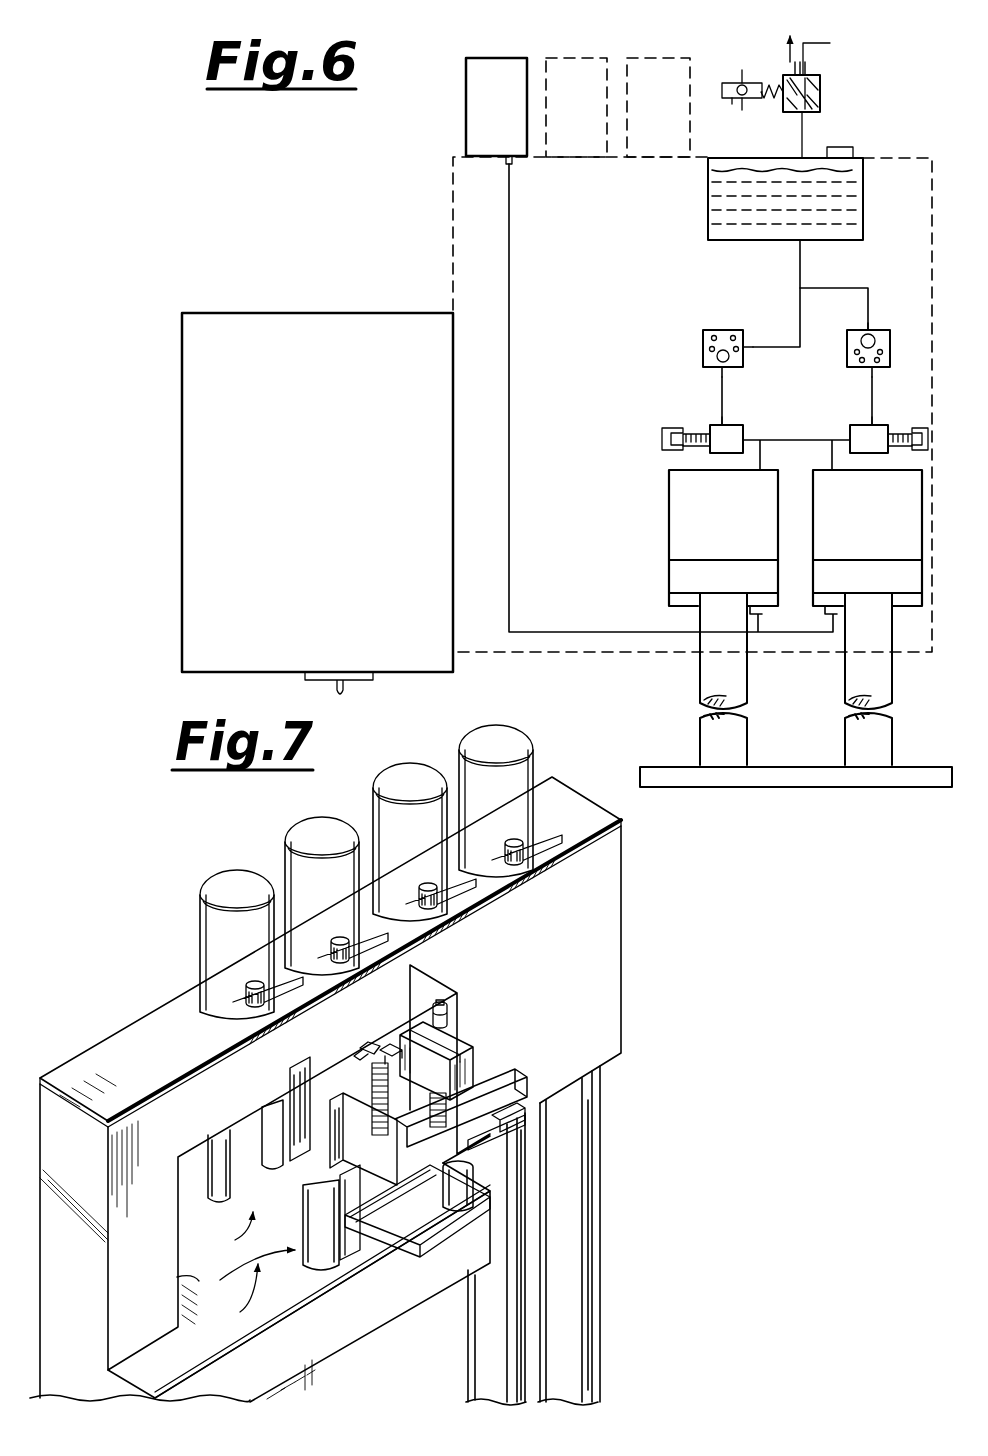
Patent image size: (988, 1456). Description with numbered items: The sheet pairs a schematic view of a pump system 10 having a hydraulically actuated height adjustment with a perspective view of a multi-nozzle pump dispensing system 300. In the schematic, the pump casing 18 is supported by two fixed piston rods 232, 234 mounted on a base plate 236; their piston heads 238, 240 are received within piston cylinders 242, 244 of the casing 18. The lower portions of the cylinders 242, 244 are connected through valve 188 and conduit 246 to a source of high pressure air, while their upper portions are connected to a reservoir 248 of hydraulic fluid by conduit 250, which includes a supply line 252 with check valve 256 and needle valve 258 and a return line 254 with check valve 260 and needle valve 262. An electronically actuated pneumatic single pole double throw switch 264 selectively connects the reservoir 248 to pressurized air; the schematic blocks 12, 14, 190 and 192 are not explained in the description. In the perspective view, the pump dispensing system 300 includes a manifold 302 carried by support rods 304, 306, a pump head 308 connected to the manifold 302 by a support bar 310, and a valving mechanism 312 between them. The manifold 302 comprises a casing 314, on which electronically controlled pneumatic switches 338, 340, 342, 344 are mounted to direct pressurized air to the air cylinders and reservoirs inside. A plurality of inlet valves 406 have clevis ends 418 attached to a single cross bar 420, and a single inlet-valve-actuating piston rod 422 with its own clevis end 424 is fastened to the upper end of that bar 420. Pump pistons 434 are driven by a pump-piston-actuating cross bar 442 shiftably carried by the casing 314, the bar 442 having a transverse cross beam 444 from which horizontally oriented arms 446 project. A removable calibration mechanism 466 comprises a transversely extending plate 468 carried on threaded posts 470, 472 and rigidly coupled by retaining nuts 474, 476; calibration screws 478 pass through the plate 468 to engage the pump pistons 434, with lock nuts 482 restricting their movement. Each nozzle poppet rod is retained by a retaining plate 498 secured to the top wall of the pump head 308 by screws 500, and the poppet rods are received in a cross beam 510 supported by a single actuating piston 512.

In FIG. 6, the dispensing system 10 is at (292, 157).
In FIG. 6, the control system 12 is at (448, 193).
In FIG. 6, the container 14 is at (233, 310).
In FIG. 6, the pump casing 18 is at (893, 158).
In FIG. 6, the valve 188 is at (481, 56).
In FIG. 6, the control unit 190 is at (573, 58).
In FIG. 6, the control unit 192 is at (658, 58).
In FIG. 6, the fixed piston rod 232 is at (893, 672).
In FIG. 6, the fixed piston rod 234 is at (700, 685).
In FIG. 6, the base plate 236 is at (815, 765).
In FIG. 6, the piston head 238 is at (886, 592).
In FIG. 6, the piston head 240 is at (742, 592).
In FIG. 6, the piston cylinder 242 is at (884, 532).
In FIG. 6, the piston cylinder 244 is at (740, 532).
In FIG. 6, the conduit 246 is at (511, 260).
In FIG. 6, the reservoir of hydraulic fluid 248 is at (845, 148).
In FIG. 6, the conduit 250 is at (792, 278).
In FIG. 6, the supply line 252 is at (853, 284).
In FIG. 6, the return line 254 is at (780, 346).
In FIG. 6, the check valve 256 is at (872, 323).
In FIG. 6, the needle valve 258 is at (916, 424).
In FIG. 6, the check valve 260 is at (703, 338).
In FIG. 6, the needle valve 262 is at (663, 430).
In FIG. 6, the pneumatic single pole double throw switch 264 is at (820, 94).
In FIG. 7, the pump dispensing system 300 is at (174, 822).
In FIG. 7, the manifold 302 is at (572, 782).
In FIG. 7, the support rod 304 is at (468, 1374).
In FIG. 7, the support rod 306 is at (602, 1264).
In FIG. 7, the pump head 308 is at (316, 1374).
In FIG. 7, the support bar 310 is at (207, 1289).
In FIG. 7, the valving mechanism 312 is at (225, 1268).
In FIG. 7, the casing 314 is at (143, 1040).
In FIG. 7, the pneumatic single pole double throw switch 338 is at (200, 925).
In FIG. 7, the pneumatic single pole double throw switch 340 is at (288, 843).
In FIG. 7, the pneumatic single pole double throw switch 342 is at (401, 770).
In FIG. 7, the pneumatic single pole double throw switch 344 is at (533, 743).
In FIG. 7, the inlet valve 406 is at (246, 1267).
In FIG. 7, the clevis end 418 is at (320, 1264).
In FIG. 7, the cross bar 420 is at (343, 1262).
In FIG. 7, the inlet-valve-actuating piston rod 422 is at (291, 1100).
In FIG. 7, the clevis end 424 is at (262, 1130).
In FIG. 7, the pump piston 434 is at (457, 1140).
In FIG. 7, the pump-piston-actuating cross bar 442 is at (524, 1121).
In FIG. 7, the transverse cross beam 444 is at (523, 1128).
In FIG. 7, the horizontally oriented arm 446 is at (507, 1137).
In FIG. 7, the calibration mechanism 466 is at (467, 1030).
In FIG. 7, the transversely extending plate 468 is at (478, 1074).
In FIG. 7, the threaded post 470 is at (420, 1039).
In FIG. 7, the threaded post 472 is at (372, 1048).
In FIG. 7, the retaining nut 474 is at (395, 1044).
In FIG. 7, the retaining nut 476 is at (417, 1034).
In FIG. 7, the calibration screw 478 is at (455, 998).
In FIG. 7, the lock nut 482 is at (473, 1058).
In FIG. 7, the retaining plate 498 is at (412, 1240).
In FIG. 7, the screw 500 is at (371, 1258).
In FIG. 7, the cross beam 510 is at (428, 1249).
In FIG. 7, the actuating piston 512 is at (329, 1084).